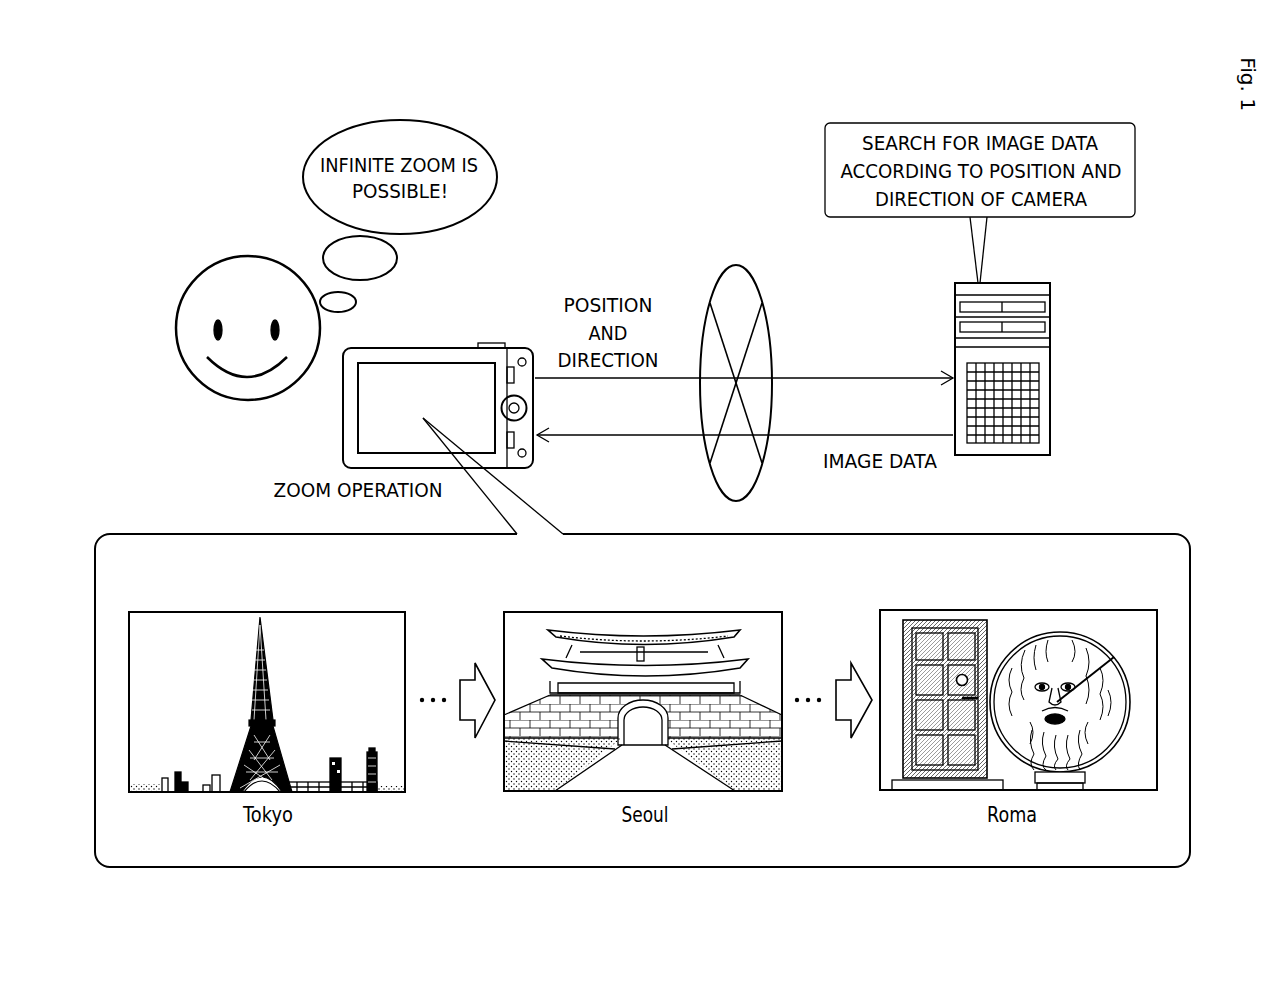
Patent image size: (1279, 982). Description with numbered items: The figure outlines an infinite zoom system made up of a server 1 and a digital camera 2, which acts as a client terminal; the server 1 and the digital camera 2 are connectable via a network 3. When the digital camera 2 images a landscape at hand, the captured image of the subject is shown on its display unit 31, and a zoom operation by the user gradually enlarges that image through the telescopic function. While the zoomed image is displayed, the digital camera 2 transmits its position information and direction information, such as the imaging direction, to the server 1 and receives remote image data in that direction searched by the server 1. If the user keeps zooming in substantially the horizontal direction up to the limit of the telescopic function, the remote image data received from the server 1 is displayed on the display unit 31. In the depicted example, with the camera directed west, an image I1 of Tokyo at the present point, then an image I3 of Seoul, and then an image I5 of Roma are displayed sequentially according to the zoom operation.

The server 1 is at (1002, 283).
The digital camera 2 is at (416, 383).
The network 3 is at (735, 264).
The display unit 31 is at (358, 408).
The image of Tokyo I1 is at (267, 612).
The image of Seoul I3 is at (642, 612).
The image of Roma I5 is at (1020, 610).